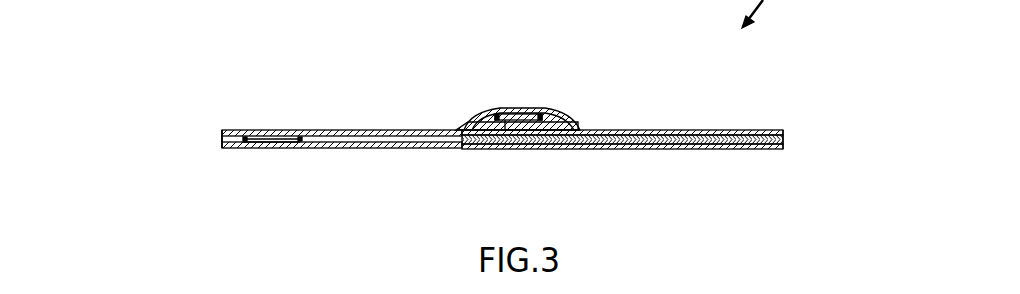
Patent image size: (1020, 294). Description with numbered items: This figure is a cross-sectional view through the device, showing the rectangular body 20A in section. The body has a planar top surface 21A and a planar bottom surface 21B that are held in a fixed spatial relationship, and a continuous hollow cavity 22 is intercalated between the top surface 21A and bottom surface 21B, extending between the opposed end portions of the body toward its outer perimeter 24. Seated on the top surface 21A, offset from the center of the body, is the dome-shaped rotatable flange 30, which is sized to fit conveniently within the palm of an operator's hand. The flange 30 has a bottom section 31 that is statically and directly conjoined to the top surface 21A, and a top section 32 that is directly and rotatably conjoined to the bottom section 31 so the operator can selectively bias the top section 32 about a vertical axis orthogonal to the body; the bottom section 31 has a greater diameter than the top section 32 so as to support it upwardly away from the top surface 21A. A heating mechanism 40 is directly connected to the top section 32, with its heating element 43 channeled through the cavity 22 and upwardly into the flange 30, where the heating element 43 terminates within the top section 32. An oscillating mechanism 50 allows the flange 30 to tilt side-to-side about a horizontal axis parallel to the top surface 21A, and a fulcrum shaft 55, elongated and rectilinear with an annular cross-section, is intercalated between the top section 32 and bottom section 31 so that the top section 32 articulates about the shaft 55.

The rectangular body 20A is at (549, 139).
The top surface 21A is at (724, 131).
The bottom surface 21B is at (697, 149).
The cavity 22 is at (225, 149).
The outer perimeter 24 is at (222, 135).
The rotatable flange 30 is at (558, 116).
The bottom section 31 is at (580, 130).
The top section 32 is at (483, 116).
The heating mechanism 40 is at (344, 130).
The heating element 43 is at (360, 148).
The oscillating mechanism 50 is at (462, 128).
The fulcrum shaft 55 is at (505, 130).